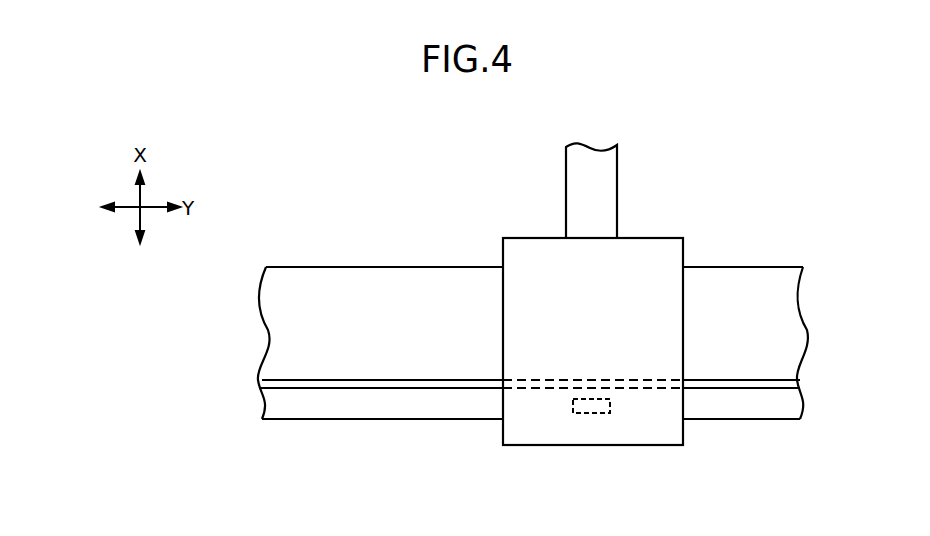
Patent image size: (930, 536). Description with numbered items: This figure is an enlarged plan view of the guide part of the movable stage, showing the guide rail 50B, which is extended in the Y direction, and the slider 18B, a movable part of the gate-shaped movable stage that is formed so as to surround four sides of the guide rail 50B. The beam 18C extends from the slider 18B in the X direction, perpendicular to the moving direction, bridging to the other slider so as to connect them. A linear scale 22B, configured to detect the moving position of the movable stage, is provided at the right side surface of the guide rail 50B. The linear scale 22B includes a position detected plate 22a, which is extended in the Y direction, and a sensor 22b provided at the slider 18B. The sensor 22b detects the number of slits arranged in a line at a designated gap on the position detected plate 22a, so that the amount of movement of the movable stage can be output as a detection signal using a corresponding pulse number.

The guide rail 50B is at (379, 267).
The position detected plate 22a is at (380, 388).
The slider 18B is at (675, 323).
The beam 18C is at (614, 201).
The sensor 22b is at (596, 414).
The linear scale 22B is at (618, 410).